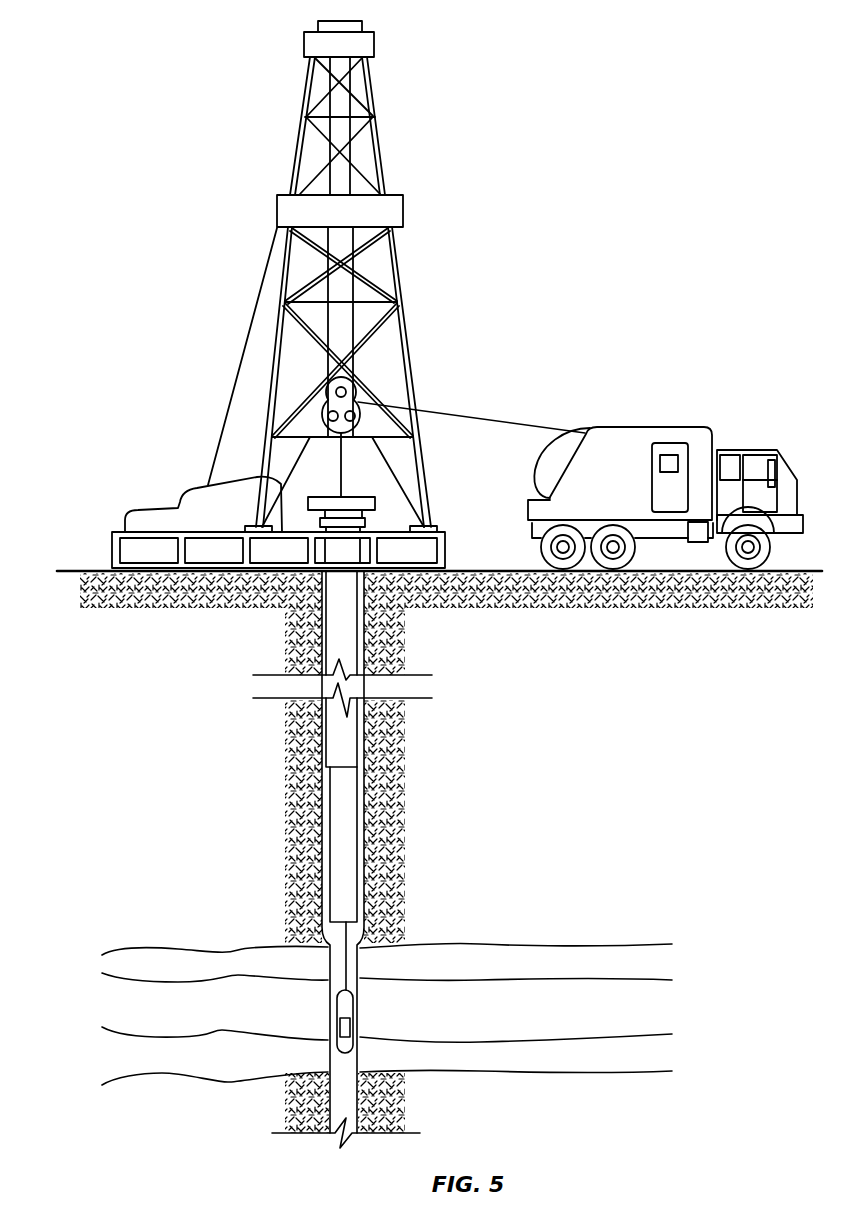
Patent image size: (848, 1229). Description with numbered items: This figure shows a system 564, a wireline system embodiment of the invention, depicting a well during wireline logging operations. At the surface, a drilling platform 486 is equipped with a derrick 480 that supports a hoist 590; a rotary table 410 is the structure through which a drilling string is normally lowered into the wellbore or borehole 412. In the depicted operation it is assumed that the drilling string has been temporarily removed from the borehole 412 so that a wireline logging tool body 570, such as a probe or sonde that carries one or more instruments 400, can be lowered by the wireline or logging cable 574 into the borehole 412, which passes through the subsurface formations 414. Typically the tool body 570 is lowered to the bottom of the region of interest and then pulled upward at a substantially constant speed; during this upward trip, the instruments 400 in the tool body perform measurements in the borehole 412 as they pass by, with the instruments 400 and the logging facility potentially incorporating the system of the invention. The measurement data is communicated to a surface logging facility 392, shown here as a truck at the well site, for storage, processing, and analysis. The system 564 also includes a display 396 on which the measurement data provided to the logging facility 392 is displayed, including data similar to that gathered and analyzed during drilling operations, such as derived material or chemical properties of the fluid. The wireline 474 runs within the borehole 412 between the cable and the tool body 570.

The system 564 is at (541, 284).
The hoist 590 is at (326, 400).
The wireline or logging cable 574 is at (463, 412).
The logging facility 392 is at (650, 427).
The display 396 is at (660, 460).
The rotary table 410 is at (375, 498).
The derrick 480 is at (377, 520).
The drilling platform 486 is at (447, 550).
The borehole 412 is at (328, 967).
The wireline 474 is at (347, 975).
The tool body 570 is at (345, 1005).
The instruments 400 is at (350, 1032).
The subsurface formations 414 is at (683, 932).